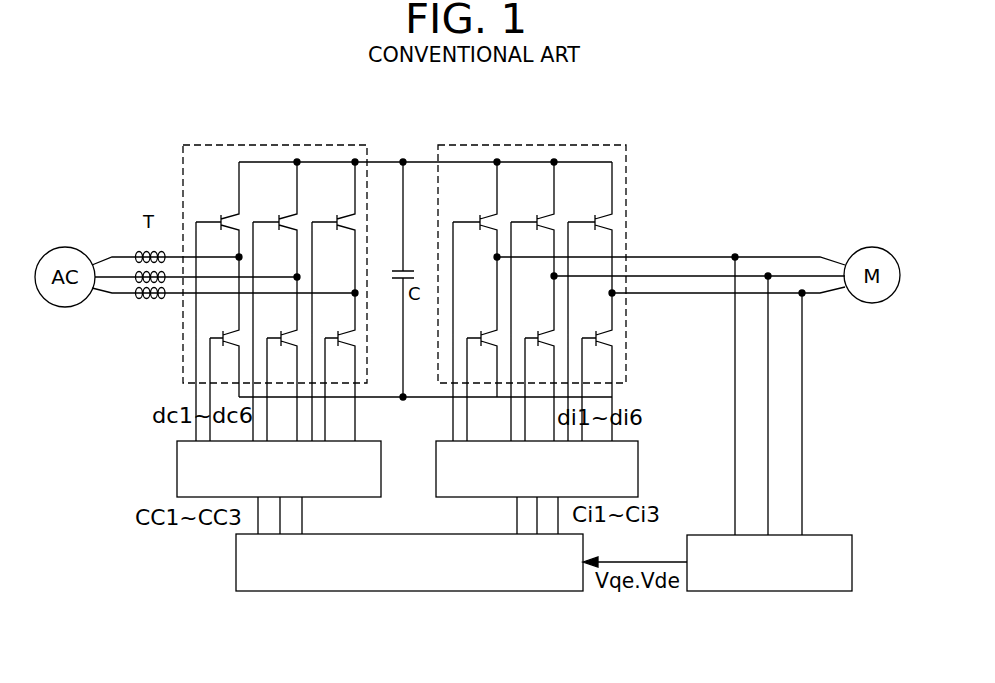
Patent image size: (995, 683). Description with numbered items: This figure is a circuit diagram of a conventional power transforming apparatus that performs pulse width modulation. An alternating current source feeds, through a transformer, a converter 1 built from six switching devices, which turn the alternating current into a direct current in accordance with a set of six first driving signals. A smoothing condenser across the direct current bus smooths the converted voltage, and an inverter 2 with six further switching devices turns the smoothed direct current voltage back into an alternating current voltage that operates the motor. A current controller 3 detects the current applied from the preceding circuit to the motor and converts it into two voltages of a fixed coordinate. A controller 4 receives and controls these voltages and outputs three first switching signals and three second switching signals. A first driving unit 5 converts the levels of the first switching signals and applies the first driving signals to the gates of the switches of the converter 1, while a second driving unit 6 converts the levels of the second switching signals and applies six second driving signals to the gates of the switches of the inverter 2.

The converter 1 is at (278, 145).
The inverter 2 is at (523, 145).
The current controller 3 is at (761, 591).
The controller 4 is at (411, 591).
The first driving unit 5 is at (177, 475).
The second driving unit 6 is at (638, 470).